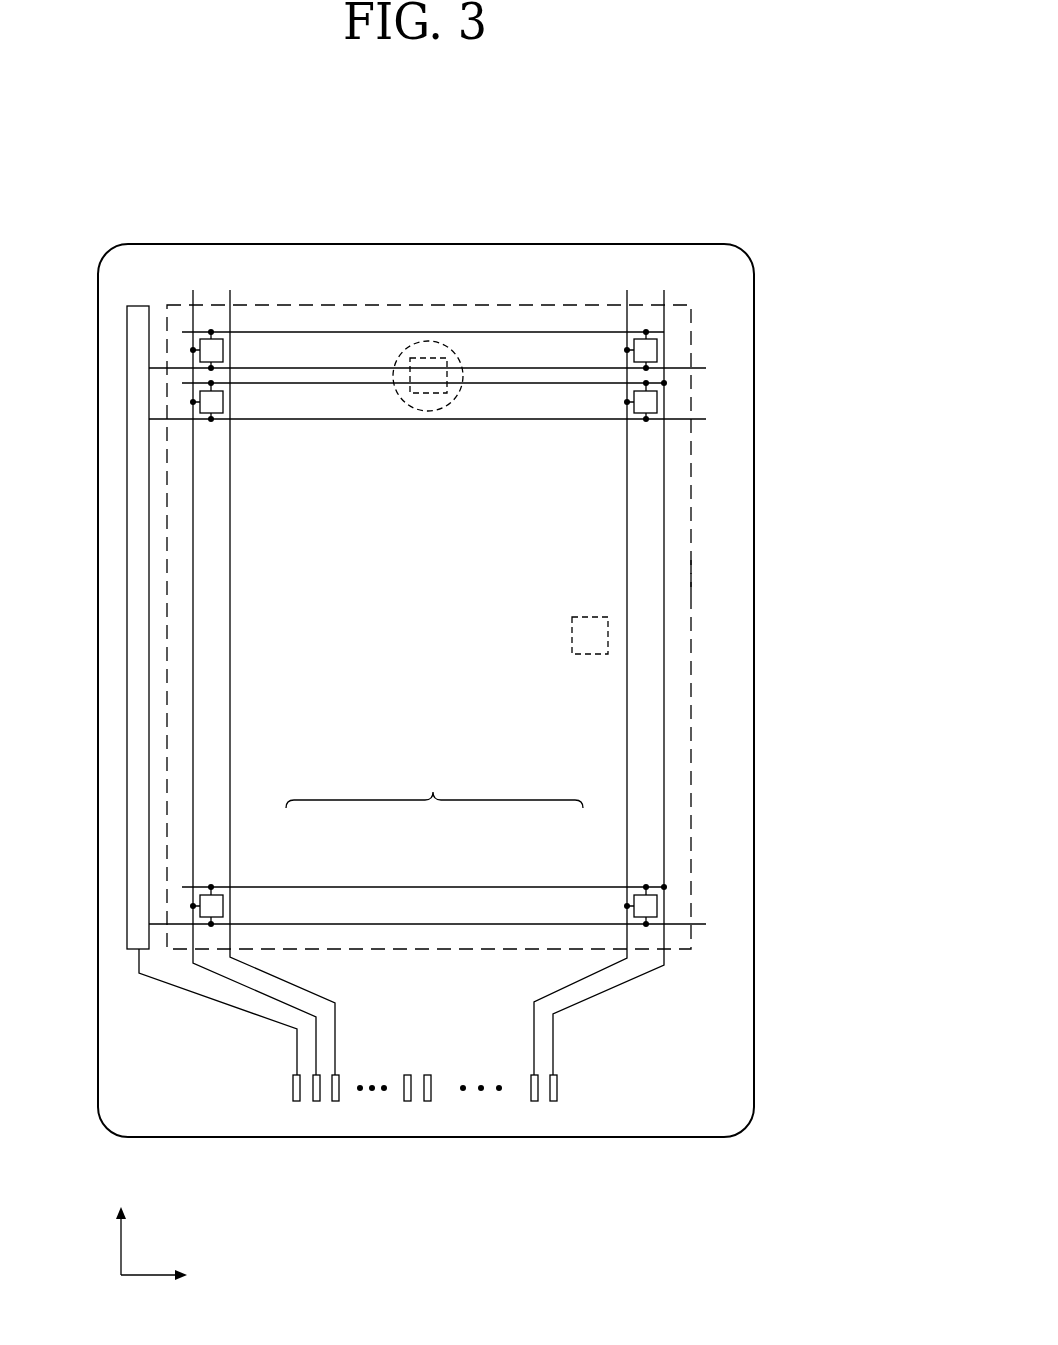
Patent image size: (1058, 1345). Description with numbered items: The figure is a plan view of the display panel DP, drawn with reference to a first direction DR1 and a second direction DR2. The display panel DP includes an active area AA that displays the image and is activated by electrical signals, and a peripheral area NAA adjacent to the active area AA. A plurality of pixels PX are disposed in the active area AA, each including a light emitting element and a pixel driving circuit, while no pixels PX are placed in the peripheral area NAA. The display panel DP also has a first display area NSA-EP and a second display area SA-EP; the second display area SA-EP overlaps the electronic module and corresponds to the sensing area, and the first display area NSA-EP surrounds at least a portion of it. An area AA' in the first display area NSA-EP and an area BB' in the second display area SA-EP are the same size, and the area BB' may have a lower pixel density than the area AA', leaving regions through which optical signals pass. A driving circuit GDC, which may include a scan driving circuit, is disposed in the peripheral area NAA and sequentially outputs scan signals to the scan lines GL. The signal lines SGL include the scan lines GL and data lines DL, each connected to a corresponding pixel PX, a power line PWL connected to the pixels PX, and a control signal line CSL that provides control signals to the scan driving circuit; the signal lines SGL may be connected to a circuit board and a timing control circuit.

The display panel DP is at (703, 188).
The active area AA is at (542, 627).
The peripheral area NAA is at (730, 452).
The second display area SA-EP is at (430, 412).
The first display area NSA-EP is at (691, 577).
The area BB' is at (434, 289).
The area AA' is at (697, 635).
The driving circuit GDC is at (137, 627).
The pixels PX is at (223, 349).
The signal lines SGL is at (434, 785).
The data lines DL is at (232, 820).
The control signal line CSL is at (247, 1010).
The scan lines GL is at (482, 923).
The power line PWL is at (663, 820).
The first direction DR1 is at (175, 1272).
The second direction DR2 is at (121, 1226).